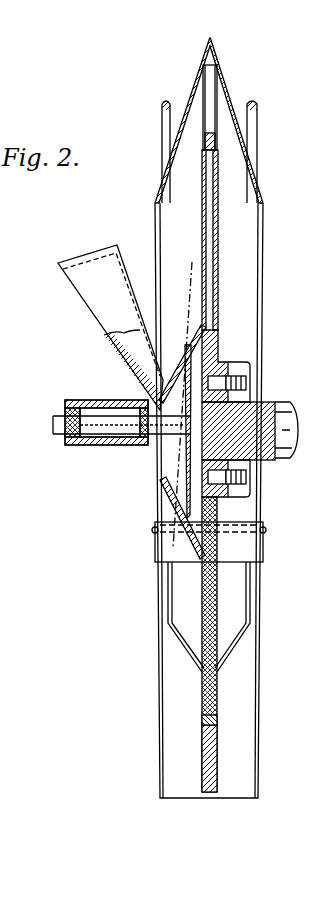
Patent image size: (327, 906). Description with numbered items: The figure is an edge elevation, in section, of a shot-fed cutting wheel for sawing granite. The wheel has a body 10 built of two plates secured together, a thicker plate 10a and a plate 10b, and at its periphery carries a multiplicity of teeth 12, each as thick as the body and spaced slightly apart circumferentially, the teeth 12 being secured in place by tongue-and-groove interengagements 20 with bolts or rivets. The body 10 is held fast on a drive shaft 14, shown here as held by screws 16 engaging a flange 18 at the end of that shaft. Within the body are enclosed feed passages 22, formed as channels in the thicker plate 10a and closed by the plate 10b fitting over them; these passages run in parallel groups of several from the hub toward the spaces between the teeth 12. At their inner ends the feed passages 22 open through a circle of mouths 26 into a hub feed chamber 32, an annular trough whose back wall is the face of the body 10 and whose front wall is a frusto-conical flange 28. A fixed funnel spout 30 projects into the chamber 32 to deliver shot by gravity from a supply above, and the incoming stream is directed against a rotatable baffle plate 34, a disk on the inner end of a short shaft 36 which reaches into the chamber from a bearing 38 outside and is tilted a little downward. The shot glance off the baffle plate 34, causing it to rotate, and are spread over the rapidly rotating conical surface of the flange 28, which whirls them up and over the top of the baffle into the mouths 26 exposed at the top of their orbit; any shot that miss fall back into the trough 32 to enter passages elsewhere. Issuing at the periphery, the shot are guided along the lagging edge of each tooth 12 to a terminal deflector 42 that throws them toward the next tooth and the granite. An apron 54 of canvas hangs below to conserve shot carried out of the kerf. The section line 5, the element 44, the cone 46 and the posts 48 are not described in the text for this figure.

The pivot axis / section line 5 is at (190, 267).
The body 10 is at (218, 262).
The thicker plate 10a is at (220, 345).
The plate 10b is at (203, 232).
The teeth 12 is at (216, 100).
The drive shaft 14 is at (287, 403).
The screws 16 is at (247, 383).
The flange 18 is at (248, 368).
The tongue-and-groove interengagements 20 is at (207, 140).
The feed passages 22 is at (213, 218).
The mouths 26 is at (200, 328).
The frusto-conical flange 28 is at (165, 490).
The spout 30 is at (100, 312).
The hub feed chamber 32 is at (200, 514).
The baffle plate 34 is at (188, 460).
The shaft 36 is at (53, 421).
The bearing 38 is at (85, 446).
The terminal deflector 42 is at (8, 300).
The member 44 is at (0, 250).
The nose cone 46 is at (258, 193).
The posts 48 is at (163, 119).
The apron 54 is at (258, 672).